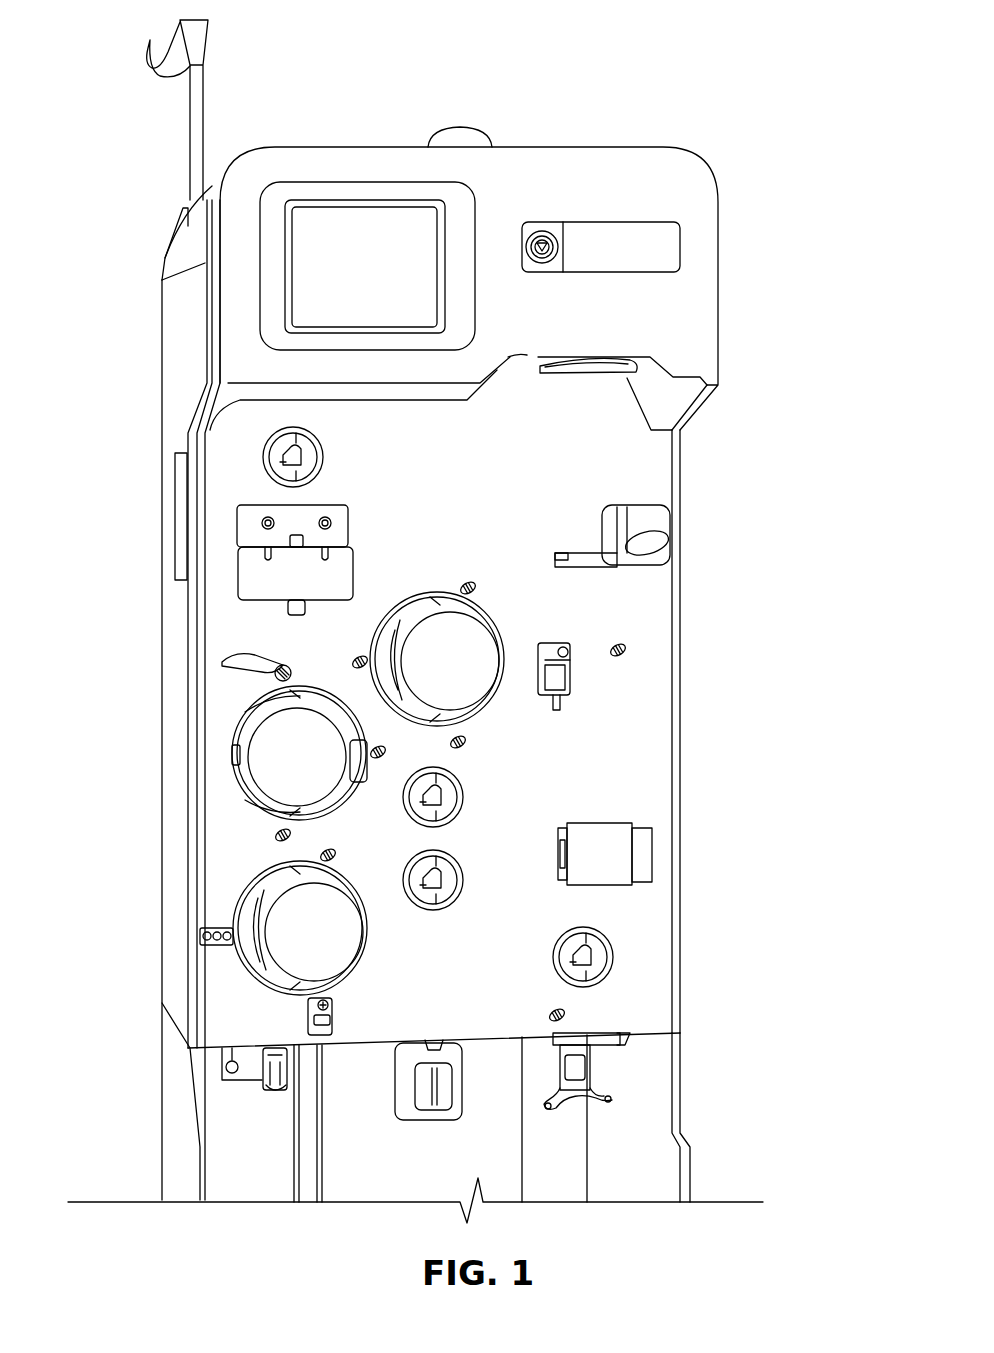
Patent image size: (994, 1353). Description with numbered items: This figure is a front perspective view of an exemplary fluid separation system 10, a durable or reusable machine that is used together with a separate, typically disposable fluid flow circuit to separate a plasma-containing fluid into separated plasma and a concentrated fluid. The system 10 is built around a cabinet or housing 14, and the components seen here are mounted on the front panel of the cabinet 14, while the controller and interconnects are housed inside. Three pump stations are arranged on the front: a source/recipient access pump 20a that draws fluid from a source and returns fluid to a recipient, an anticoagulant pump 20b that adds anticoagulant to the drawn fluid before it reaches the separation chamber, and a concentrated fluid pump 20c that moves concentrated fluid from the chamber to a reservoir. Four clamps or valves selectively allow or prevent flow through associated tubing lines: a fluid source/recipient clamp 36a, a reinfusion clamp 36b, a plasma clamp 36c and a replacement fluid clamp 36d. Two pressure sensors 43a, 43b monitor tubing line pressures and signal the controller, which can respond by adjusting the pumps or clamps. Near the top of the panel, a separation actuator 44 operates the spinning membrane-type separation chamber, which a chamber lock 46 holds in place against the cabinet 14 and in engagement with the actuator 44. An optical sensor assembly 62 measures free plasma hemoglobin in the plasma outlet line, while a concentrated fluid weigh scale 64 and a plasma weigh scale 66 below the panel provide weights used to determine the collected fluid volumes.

The fluid separation system 10 is at (174, 558).
The cabinet or housing 14 is at (707, 292).
The source/recipient access pump 20a is at (288, 928).
The anticoagulant pump 20b is at (265, 768).
The concentrated fluid pump 20c is at (472, 647).
The fluid source/recipient clamp or valve 36a is at (463, 792).
The reinfusion clamp or valve 36b is at (465, 867).
The plasma clamp or valve 36c is at (605, 958).
The replacement fluid clamp or valve 36d is at (263, 458).
The pressure sensor 43a is at (262, 525).
The pressure sensor 43b is at (318, 512).
The separation actuator 44 is at (617, 367).
The chamber lock 46 is at (660, 525).
The optical sensor assembly 62 is at (600, 857).
The concentrated fluid weigh scale 64 is at (570, 688).
The plasma weigh scale 66 is at (587, 1070).